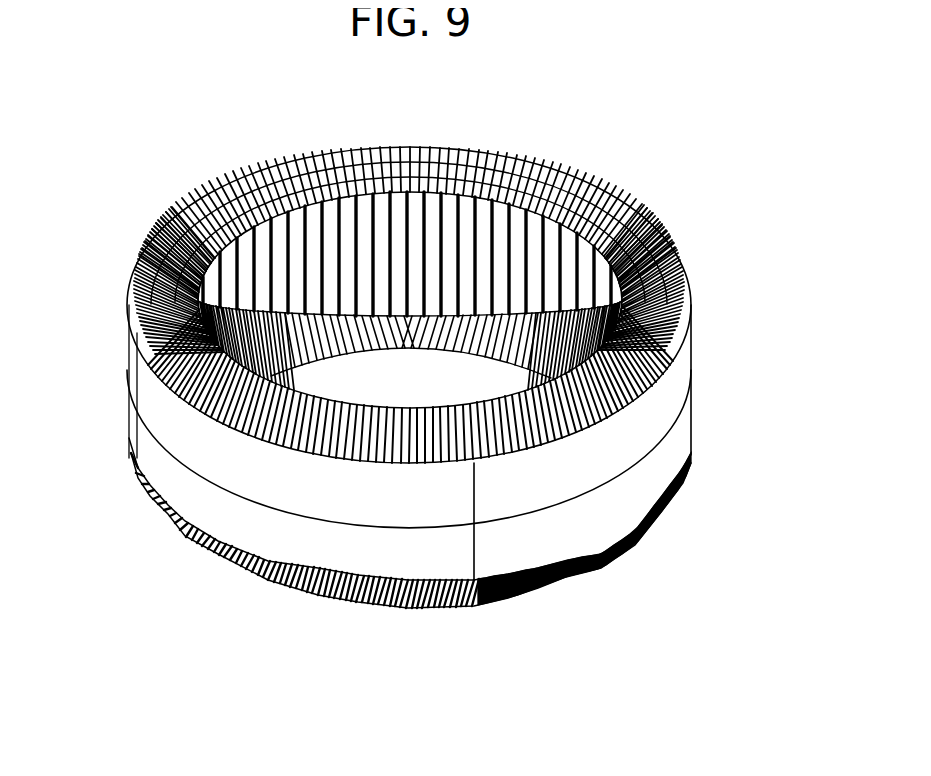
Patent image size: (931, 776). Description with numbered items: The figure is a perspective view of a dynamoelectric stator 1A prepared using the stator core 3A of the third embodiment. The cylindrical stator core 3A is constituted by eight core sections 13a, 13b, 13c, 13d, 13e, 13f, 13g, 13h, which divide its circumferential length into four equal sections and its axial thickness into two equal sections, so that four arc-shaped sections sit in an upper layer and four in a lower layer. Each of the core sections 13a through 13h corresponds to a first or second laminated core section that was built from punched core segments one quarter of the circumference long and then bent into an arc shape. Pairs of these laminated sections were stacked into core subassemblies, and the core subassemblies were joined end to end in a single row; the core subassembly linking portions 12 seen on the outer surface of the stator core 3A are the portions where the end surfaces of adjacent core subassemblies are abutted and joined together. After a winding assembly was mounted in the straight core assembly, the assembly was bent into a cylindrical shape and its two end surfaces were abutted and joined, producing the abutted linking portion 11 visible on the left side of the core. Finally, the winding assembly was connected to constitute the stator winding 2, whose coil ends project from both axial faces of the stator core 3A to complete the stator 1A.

The stator 1A is at (109, 157).
The stator winding 2 is at (627, 203).
The abutted linking portion 11 is at (122, 372).
The core subassembly linking portion 12 is at (443, 136).
The stator core 3A is at (688, 382).
The core section 13a is at (233, 527).
The core section 13b is at (223, 457).
The core section 13c is at (590, 520).
The core section 13d is at (600, 462).
The core section 13e is at (582, 189).
The core section 13f is at (545, 178).
The core section 13g is at (216, 181).
The core section 13h is at (266, 160).